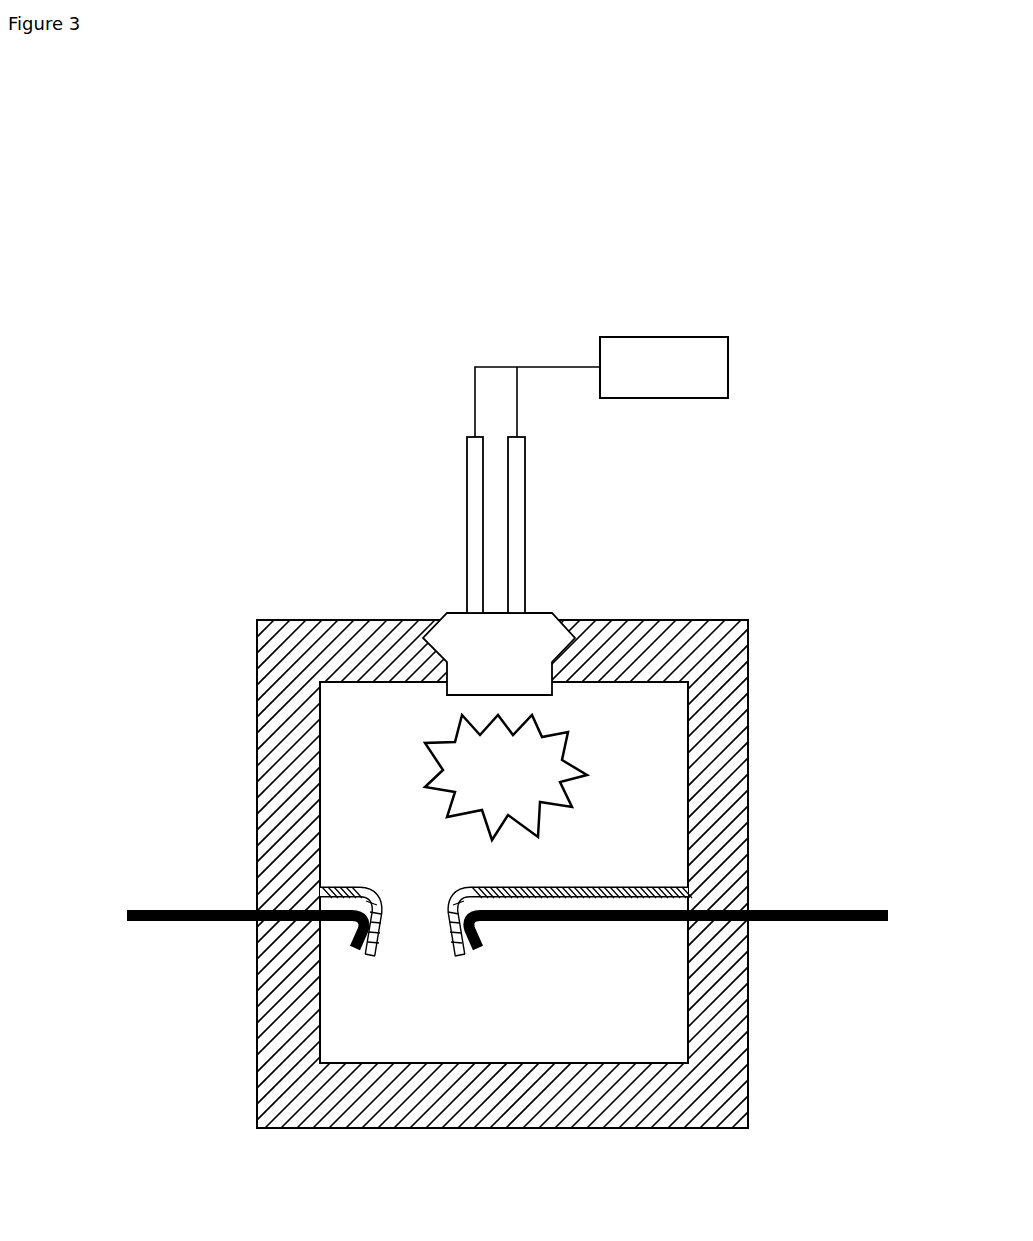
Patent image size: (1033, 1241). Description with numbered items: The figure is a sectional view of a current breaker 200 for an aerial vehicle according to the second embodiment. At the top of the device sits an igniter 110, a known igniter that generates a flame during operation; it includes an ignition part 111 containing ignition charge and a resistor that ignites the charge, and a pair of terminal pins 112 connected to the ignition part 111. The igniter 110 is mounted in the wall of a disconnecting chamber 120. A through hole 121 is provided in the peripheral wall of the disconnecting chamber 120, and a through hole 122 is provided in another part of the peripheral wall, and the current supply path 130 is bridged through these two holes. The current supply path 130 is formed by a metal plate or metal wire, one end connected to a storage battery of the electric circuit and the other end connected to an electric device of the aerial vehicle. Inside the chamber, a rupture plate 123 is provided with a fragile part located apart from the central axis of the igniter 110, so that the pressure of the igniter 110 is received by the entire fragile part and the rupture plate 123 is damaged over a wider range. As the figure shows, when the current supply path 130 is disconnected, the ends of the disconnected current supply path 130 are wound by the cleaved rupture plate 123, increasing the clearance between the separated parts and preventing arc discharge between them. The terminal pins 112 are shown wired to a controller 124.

The current breaker for an aerial vehicle 200 is at (525, 188).
The igniter 110 is at (493, 531).
The ignition part 111 is at (457, 632).
The terminal pins 112 is at (477, 473).
The disconnecting chamber 120 is at (288, 643).
The through hole 121 is at (261, 855).
The through hole 122 is at (725, 895).
The rupture plate 123 is at (355, 882).
The controller 124 is at (647, 337).
The current supply path 130 is at (160, 923).